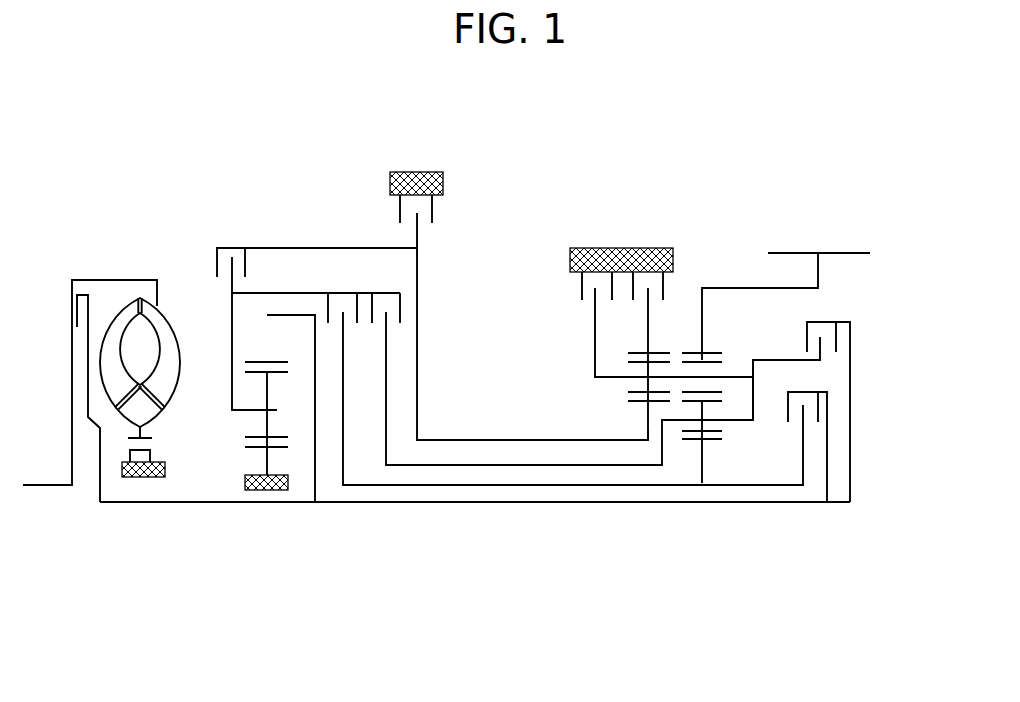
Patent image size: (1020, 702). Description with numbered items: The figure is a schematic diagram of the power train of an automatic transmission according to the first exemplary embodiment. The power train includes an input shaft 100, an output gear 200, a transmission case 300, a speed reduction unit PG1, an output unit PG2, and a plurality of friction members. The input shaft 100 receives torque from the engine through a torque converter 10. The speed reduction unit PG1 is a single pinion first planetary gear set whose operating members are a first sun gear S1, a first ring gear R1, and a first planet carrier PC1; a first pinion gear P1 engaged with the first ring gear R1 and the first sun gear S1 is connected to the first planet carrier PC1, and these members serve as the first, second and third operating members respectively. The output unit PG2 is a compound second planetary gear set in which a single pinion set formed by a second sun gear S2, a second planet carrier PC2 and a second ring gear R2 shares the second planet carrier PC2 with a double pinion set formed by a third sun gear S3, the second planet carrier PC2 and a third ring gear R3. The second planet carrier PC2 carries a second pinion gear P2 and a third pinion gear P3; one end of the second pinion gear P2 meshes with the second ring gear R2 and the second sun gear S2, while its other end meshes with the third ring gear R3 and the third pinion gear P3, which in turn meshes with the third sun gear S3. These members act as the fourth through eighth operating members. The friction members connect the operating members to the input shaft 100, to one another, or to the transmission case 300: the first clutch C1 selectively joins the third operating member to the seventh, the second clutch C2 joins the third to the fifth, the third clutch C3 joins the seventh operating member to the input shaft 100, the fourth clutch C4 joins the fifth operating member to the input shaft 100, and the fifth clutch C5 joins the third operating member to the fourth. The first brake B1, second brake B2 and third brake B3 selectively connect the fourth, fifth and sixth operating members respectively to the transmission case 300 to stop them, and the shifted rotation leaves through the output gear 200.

The torque converter 10 is at (167, 312).
The input shaft 100 is at (197, 503).
The output gear 200 is at (828, 257).
The transmission case 300 is at (425, 173).
The first clutch C1 is at (517, 375).
The second clutch C2 is at (596, 365).
The third clutch C3 is at (807, 432).
The fourth clutch C4 is at (831, 397).
The fifth clutch C5 is at (317, 312).
The first brake B1 is at (510, 317).
The second brake B2 is at (653, 324).
The third brake B3 is at (662, 287).
The speed reduction unit PG1 is at (259, 447).
The output unit PG2 is at (658, 441).
The first ring gear R1 is at (260, 339).
The first pinion gear P1 is at (281, 423).
The first planet carrier PC1 is at (236, 424).
The first sun gear S1 is at (248, 455).
The second ring gear R2 is at (641, 330).
The second pinion gear P2 is at (677, 385).
The second planet carrier PC2 is at (612, 398).
The second sun gear S2 is at (619, 426).
The third ring gear R3 is at (722, 343).
The third pinion gear P3 is at (715, 404).
The third sun gear S3 is at (722, 451).